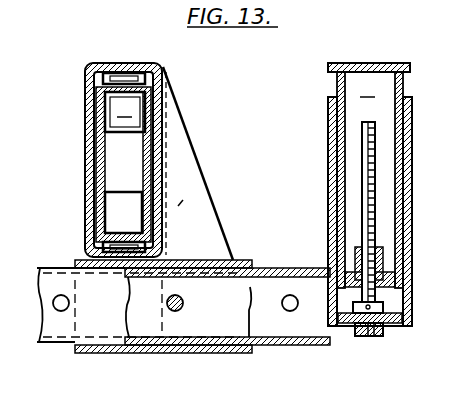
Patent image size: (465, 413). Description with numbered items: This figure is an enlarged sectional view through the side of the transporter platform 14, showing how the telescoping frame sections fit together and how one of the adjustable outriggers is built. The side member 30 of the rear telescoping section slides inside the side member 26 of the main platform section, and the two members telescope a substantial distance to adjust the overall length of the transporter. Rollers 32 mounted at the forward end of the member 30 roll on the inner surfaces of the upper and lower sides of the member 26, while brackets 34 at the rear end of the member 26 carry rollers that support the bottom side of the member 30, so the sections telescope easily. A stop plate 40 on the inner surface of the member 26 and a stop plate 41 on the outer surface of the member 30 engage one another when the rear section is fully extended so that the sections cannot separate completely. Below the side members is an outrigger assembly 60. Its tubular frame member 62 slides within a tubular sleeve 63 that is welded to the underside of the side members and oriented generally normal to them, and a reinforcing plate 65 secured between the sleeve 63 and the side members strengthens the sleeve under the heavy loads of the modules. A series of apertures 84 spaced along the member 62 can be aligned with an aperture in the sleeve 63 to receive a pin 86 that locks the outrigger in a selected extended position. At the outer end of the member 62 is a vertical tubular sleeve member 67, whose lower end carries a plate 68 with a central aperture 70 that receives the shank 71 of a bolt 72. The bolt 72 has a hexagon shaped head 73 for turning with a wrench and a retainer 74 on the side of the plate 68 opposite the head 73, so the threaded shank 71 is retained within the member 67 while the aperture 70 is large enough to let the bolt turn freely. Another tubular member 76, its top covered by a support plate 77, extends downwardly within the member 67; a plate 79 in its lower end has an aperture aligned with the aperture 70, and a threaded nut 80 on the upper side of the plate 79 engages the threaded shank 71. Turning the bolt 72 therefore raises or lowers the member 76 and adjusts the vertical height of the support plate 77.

The platform 14 is at (123, 40).
The side members of the main platform section 26 is at (85, 78).
The side members of the rear telescoping section 30 is at (100, 142).
The rollers 32 is at (120, 125).
The brackets 34 is at (464, 220).
The stop plates 40 is at (358, 406).
The stop plates 41 is at (118, 74).
The outrigger assembly 60 is at (306, 132).
The tubular frame member 62 is at (272, 267).
The tubular sleeve 63 is at (210, 353).
The reinforcing plates 65 is at (197, 175).
The vertical tubular sleeve member 67 is at (405, 165).
The plate 68 is at (390, 334).
The aperture 70 is at (362, 336).
The shank 71 is at (375, 137).
The bolt 72 is at (383, 337).
The hexagon shaped head 73 is at (372, 336).
The retainer 74 is at (383, 307).
The tubular member 76 is at (403, 82).
The support plate 77 is at (372, 63).
The plate 79 is at (397, 266).
The threaded nut 80 is at (382, 255).
The apertures 84 is at (60, 310).
The pin 86 is at (183, 305).